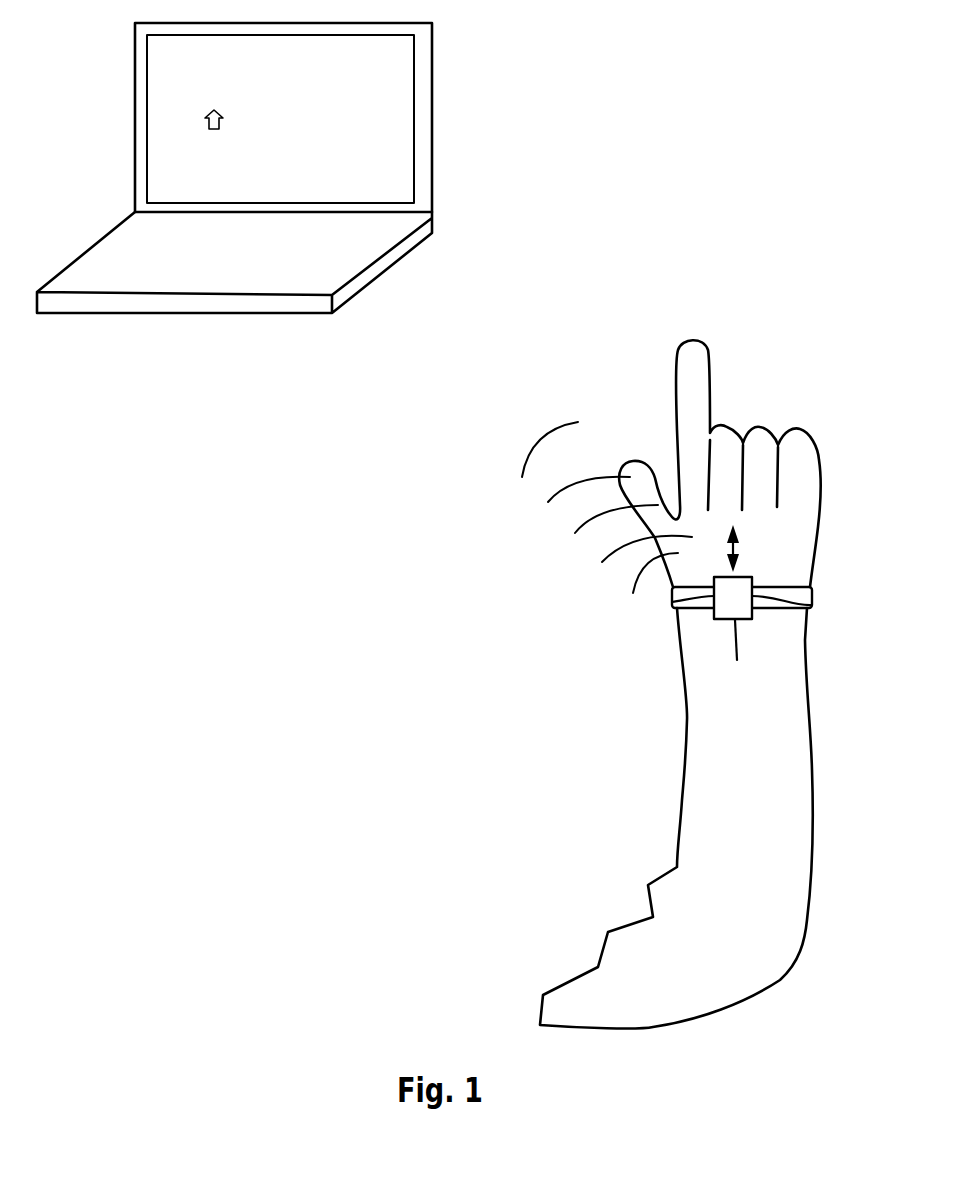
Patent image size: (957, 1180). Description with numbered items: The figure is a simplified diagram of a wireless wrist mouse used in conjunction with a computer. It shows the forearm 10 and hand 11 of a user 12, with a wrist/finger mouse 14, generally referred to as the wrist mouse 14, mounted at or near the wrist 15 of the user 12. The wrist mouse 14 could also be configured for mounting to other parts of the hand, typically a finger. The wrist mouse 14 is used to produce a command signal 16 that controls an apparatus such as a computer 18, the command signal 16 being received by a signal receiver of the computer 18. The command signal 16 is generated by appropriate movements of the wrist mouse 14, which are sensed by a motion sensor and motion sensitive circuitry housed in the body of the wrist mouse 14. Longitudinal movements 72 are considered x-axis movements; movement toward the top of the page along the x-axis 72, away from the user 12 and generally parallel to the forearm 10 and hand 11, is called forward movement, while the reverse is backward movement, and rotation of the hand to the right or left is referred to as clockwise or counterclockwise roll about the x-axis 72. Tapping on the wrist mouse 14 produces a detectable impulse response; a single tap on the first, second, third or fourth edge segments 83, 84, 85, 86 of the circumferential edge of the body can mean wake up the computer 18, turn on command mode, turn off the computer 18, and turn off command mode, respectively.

The forearm 10 is at (792, 858).
The hand 11 is at (793, 537).
The user 12 is at (613, 725).
The wrist/finger mouse 14 is at (797, 580).
The wrist 15 is at (778, 612).
The command signal 16 is at (607, 447).
The computer 18 is at (432, 152).
The longitudinal movements 72 is at (743, 545).
The first edge segment 83 is at (740, 575).
The second edge segment 84 is at (672, 602).
The third edge segment 85 is at (737, 660).
The fourth edge segment 86 is at (812, 605).